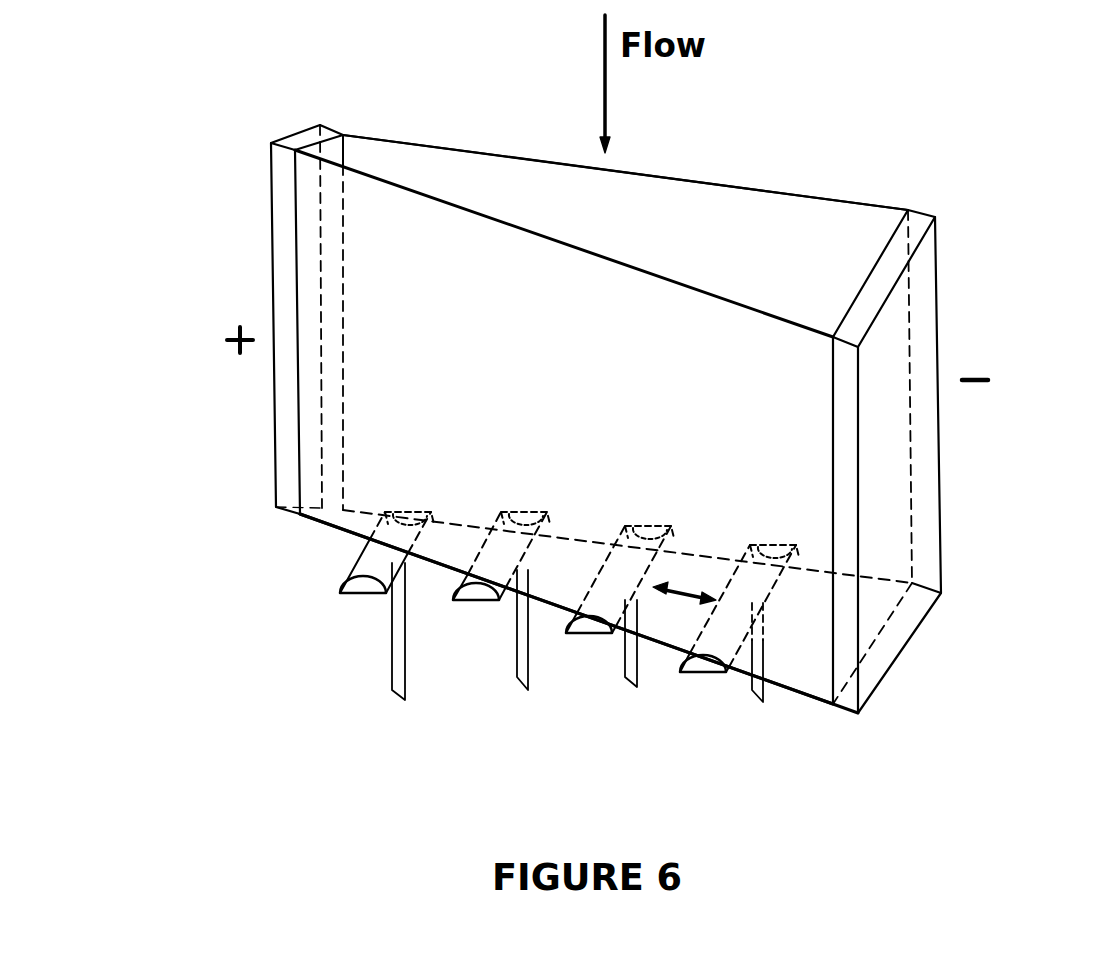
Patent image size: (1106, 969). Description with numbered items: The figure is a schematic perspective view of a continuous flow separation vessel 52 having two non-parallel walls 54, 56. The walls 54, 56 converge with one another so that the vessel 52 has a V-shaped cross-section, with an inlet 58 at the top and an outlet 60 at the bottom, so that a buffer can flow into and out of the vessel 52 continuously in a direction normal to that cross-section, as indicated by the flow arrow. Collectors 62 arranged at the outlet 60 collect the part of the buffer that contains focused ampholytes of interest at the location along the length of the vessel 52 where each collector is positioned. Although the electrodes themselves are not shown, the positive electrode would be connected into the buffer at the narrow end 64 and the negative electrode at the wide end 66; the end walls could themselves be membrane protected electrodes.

The continuous flow separation vessel 52 is at (762, 111).
The non-parallel wall 54 is at (365, 183).
The non-parallel wall 56 is at (837, 222).
The inlet 58 is at (678, 223).
The outlet 60 is at (788, 663).
The collectors 62 is at (518, 658).
The narrow end 64 is at (271, 252).
The wide end 66 is at (930, 455).